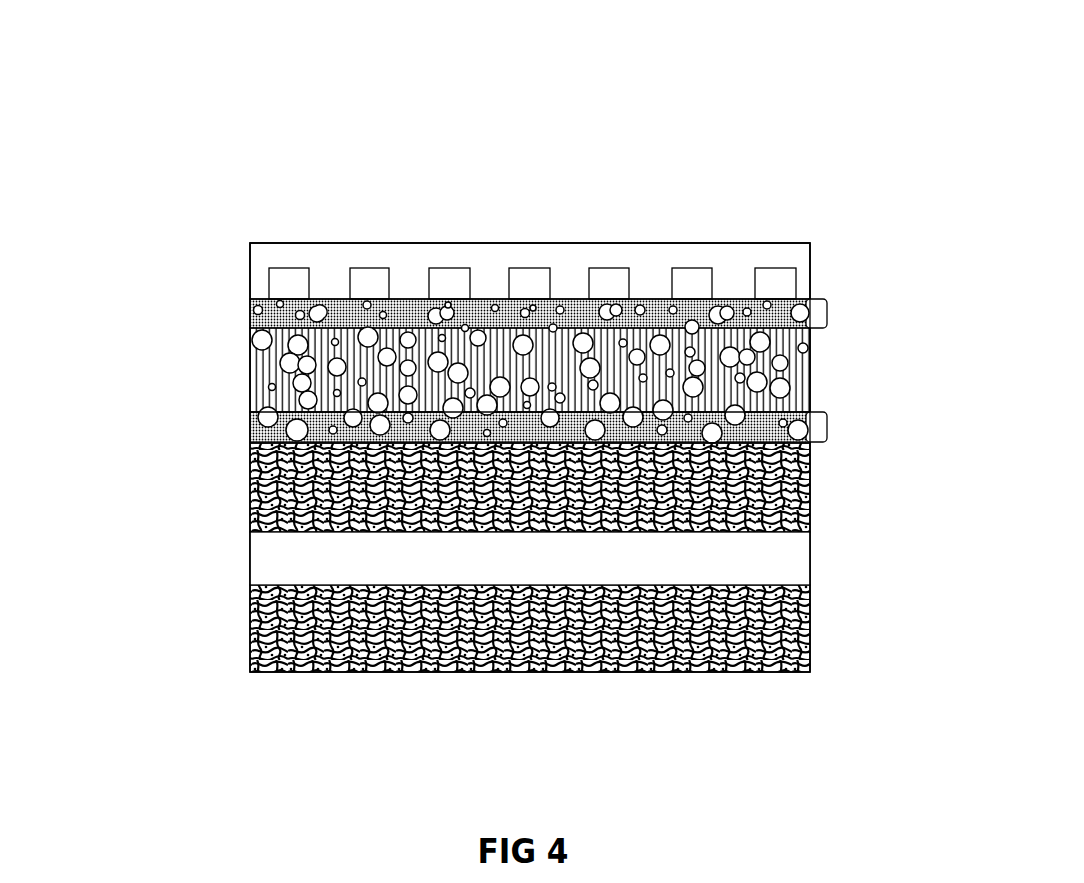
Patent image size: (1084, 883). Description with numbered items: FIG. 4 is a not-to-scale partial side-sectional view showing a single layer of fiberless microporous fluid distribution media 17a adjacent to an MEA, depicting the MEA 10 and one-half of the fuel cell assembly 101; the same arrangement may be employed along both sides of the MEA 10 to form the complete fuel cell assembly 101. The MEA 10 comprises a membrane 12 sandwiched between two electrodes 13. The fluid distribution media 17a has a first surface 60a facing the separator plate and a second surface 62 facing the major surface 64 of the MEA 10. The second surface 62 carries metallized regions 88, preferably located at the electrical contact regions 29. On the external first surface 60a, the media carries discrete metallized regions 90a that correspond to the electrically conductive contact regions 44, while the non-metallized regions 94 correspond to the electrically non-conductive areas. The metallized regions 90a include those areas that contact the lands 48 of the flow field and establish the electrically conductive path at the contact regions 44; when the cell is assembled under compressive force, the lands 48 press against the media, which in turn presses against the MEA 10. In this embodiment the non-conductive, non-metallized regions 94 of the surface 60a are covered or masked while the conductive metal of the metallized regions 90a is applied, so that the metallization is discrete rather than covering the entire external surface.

The fuel cell assembly 101 is at (648, 103).
The membrane-electrode-assembly 10 is at (250, 671).
The membrane 12 is at (810, 550).
The electrodes 13 is at (810, 497).
The electrical contact regions 29 is at (313, 443).
The fluid distribution media 17a is at (810, 370).
The electrically conductive contact regions 44 is at (490, 292).
The lands 48 is at (332, 304).
The first surface 60a is at (895, 315).
The second surface 62 is at (745, 450).
The major surface 64 is at (810, 452).
The metallized regions 88 is at (827, 425).
The discrete metallized regions 90a is at (407, 307).
The non-metallized regions 94 is at (597, 307).